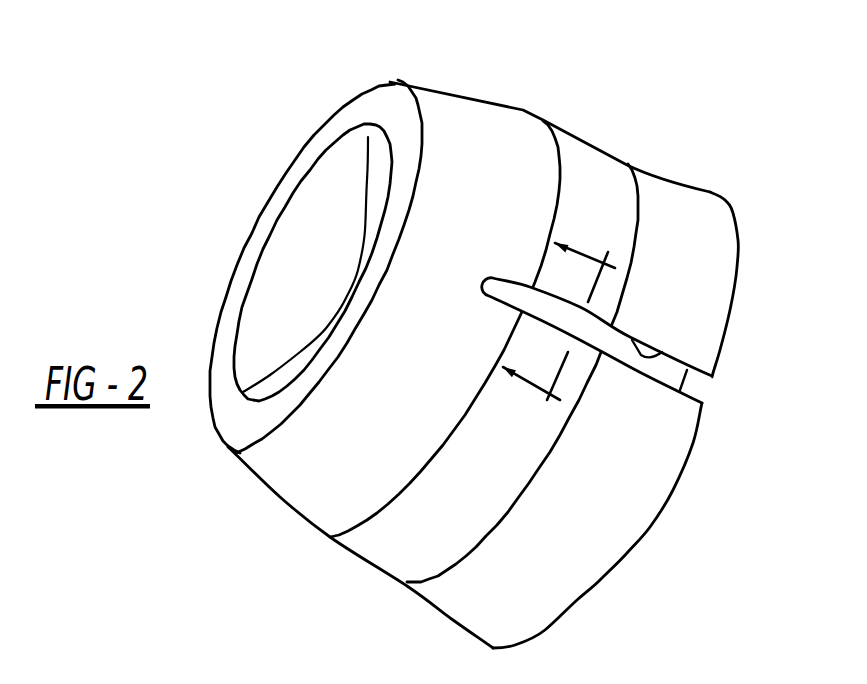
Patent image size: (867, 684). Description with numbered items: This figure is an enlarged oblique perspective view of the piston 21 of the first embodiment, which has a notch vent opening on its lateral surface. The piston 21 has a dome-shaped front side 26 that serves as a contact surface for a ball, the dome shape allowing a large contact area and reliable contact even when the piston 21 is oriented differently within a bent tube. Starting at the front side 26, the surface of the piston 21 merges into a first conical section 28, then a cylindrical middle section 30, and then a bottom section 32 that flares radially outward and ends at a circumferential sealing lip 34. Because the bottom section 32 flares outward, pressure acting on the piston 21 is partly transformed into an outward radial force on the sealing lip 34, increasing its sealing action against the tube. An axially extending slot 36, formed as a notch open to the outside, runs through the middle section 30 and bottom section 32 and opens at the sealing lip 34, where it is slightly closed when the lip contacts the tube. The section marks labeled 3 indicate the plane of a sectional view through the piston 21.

The piston 21 is at (597, 142).
The dome-shaped front side 26 is at (363, 170).
The first conical section 28 is at (466, 98).
The cylindrical middle section 30 is at (383, 550).
The bottom section 32 is at (487, 617).
The circumferential sealing lip 34 is at (600, 580).
The axially extending slot 36 is at (660, 353).
The section line 3- 3 is at (559, 317).